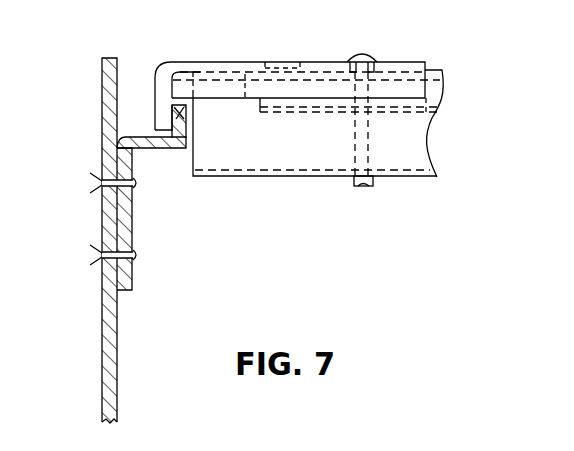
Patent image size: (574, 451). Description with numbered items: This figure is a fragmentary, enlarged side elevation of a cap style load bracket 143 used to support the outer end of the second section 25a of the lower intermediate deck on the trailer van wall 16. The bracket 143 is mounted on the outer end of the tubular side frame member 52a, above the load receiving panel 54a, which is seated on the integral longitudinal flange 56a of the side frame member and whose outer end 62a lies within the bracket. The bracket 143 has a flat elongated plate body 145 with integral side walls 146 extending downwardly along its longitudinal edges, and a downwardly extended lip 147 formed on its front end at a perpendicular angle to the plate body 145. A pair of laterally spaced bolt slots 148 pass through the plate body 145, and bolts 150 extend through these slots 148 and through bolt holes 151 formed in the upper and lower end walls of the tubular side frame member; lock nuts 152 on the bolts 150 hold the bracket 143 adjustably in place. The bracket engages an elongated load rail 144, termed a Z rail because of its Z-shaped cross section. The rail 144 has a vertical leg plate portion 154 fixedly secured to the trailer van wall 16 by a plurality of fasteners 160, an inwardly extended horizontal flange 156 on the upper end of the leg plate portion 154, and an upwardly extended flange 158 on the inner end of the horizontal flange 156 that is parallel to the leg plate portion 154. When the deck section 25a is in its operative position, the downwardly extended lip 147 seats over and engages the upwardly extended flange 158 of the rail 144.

The trailer van wall 16 is at (104, 346).
The second section of the lower intermediate deck 25a is at (318, 179).
The tubular side frame member 52a is at (300, 148).
The load receiving panel 54a is at (447, 95).
The longitudinal flange 56a is at (427, 118).
The outer end of the load receiving panel 62a is at (240, 72).
The cap style load bracket 143 is at (428, 60).
The load rail 144 is at (136, 284).
The plate body 145 is at (228, 67).
The side walls 146 is at (197, 93).
The downwardly extended lip 147 is at (157, 113).
The bolt slots 148 is at (297, 61).
The bolts 150 is at (366, 53).
The bolt holes 151 is at (338, 72).
The lock nuts 152 is at (362, 187).
The leg plate portion 154 is at (133, 232).
The horizontal flange 156 is at (138, 149).
The upwardly extended flange 158 is at (187, 131).
The fasteners 160 is at (99, 185).